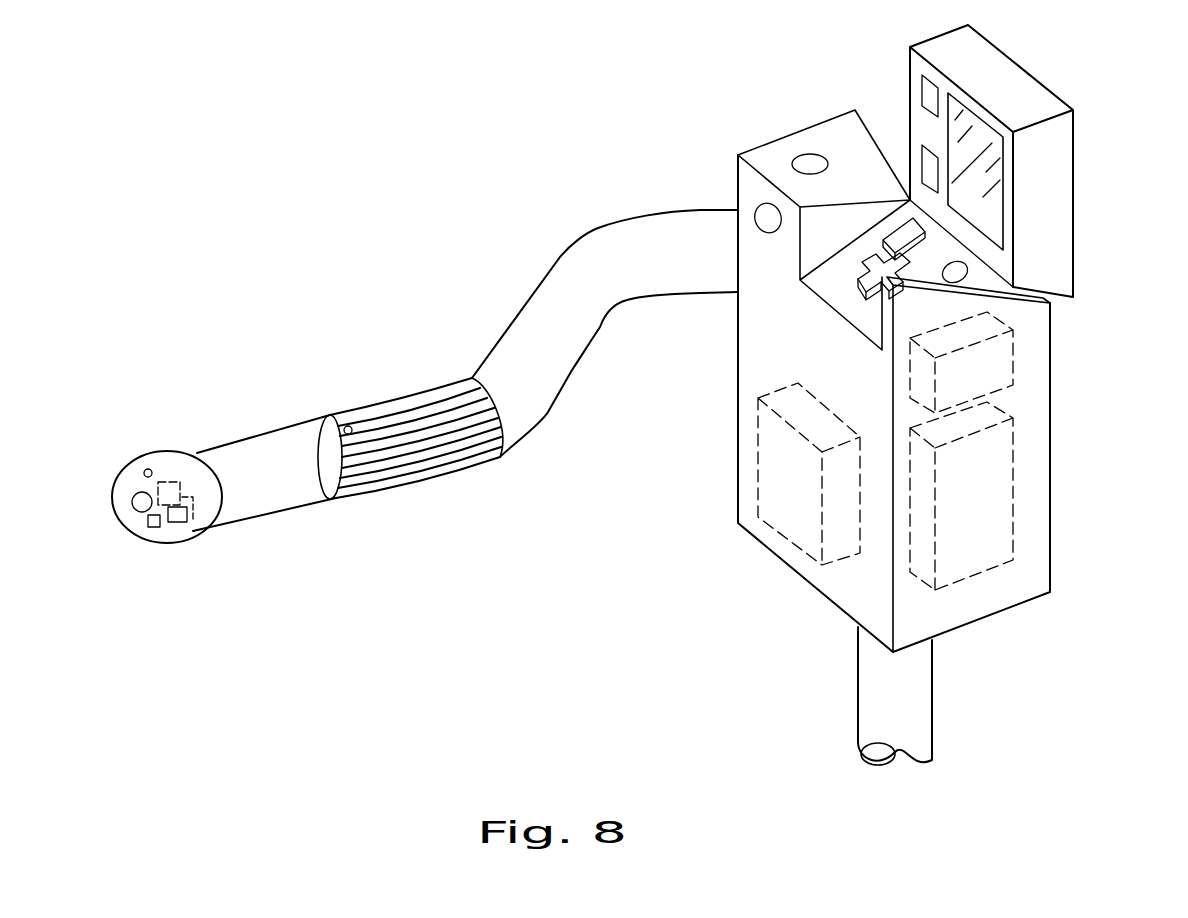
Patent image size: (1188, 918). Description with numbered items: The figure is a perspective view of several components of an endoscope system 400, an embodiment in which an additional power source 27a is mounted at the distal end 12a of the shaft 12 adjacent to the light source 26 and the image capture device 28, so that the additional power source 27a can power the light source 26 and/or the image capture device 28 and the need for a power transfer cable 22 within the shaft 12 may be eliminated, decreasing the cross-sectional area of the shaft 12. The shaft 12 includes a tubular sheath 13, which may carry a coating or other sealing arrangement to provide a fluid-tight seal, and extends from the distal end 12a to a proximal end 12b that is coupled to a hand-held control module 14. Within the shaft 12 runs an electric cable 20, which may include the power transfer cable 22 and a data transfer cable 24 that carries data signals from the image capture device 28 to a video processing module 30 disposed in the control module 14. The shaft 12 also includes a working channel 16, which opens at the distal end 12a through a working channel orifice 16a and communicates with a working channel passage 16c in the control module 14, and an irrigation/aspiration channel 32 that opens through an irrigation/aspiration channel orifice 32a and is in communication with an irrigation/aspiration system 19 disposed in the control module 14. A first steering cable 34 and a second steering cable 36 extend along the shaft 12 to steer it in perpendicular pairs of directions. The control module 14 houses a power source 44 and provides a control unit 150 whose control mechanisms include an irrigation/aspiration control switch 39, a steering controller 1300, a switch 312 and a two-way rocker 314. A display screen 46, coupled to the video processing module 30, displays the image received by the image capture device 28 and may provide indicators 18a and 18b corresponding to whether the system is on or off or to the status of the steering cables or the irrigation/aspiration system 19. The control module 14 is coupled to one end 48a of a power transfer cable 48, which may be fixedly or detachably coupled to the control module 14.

The shaft 12 is at (560, 255).
The distal end 12a is at (252, 509).
The proximal end 12b is at (722, 183).
The tubular sheath 13 is at (248, 438).
The control module 14 is at (1058, 556).
The working channel 16 is at (445, 413).
The working channel orifice 16a is at (132, 502).
The working channel passage 16c is at (798, 155).
The indicator 18a is at (918, 78).
The indicator 18b is at (916, 148).
The irrigation/aspiration system 19 is at (1000, 360).
The electric cable 20 is at (348, 426).
The power transfer cable 22 is at (362, 420).
The data transfer cable 24 is at (395, 410).
The light source 26 is at (184, 522).
The additional power source 27a is at (172, 480).
The image capture device 28 is at (157, 530).
The video processing module 30 is at (1000, 468).
The irrigation/aspiration channel 32 is at (373, 478).
The irrigation/aspiration channel orifice 32a is at (144, 473).
The first steering cable 34 is at (470, 462).
The second steering cable 36 is at (420, 470).
The irrigation/aspiration control switch 39 is at (755, 225).
The power source 44 is at (772, 468).
The display screen 46 is at (992, 137).
The power transfer cable 48 is at (907, 715).
The end of power transfer cable 48a is at (933, 641).
The control unit 150 is at (782, 278).
The switch 312 is at (960, 264).
The two-way rocker 314 is at (892, 238).
The endoscope system 400 is at (470, 647).
The steering controller 1300 is at (868, 260).